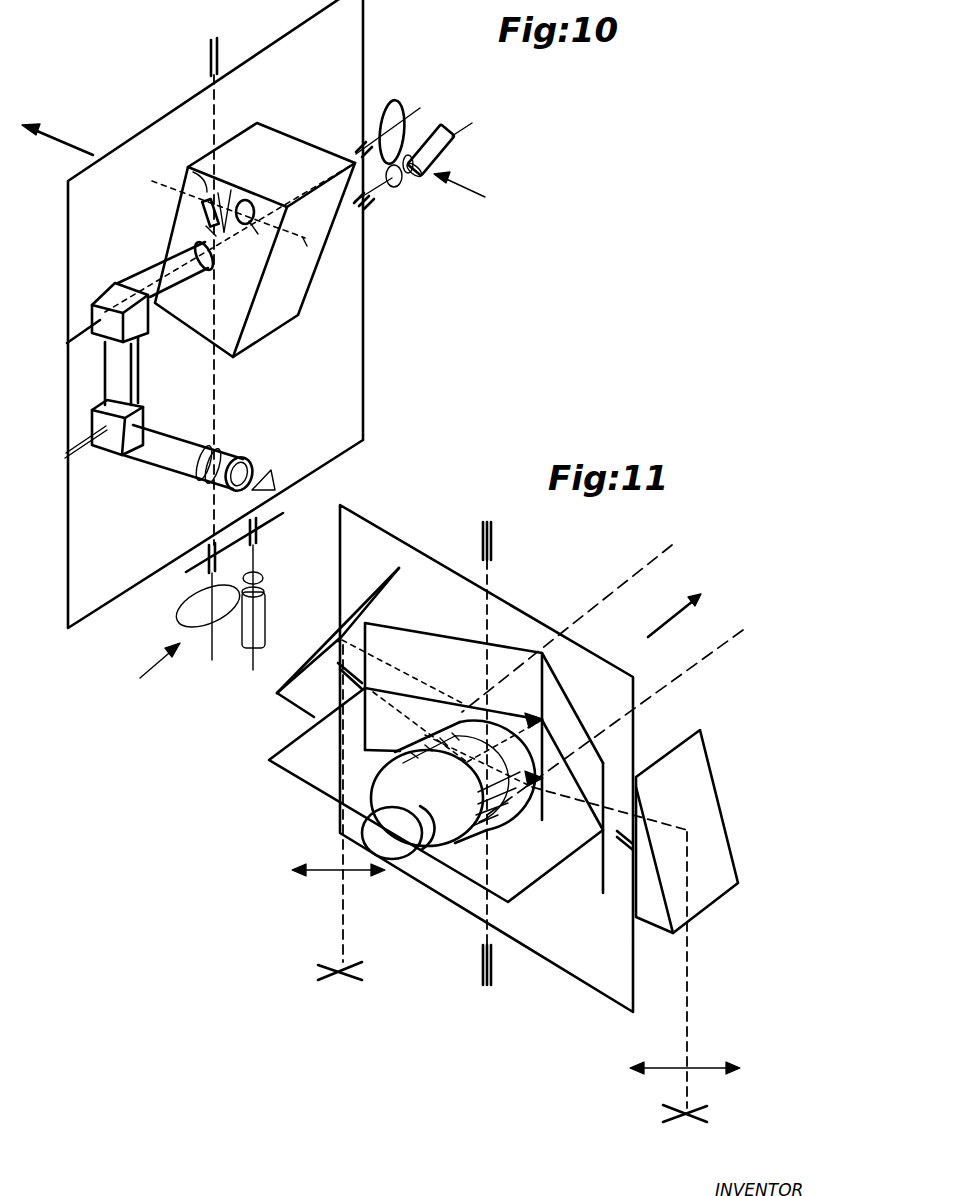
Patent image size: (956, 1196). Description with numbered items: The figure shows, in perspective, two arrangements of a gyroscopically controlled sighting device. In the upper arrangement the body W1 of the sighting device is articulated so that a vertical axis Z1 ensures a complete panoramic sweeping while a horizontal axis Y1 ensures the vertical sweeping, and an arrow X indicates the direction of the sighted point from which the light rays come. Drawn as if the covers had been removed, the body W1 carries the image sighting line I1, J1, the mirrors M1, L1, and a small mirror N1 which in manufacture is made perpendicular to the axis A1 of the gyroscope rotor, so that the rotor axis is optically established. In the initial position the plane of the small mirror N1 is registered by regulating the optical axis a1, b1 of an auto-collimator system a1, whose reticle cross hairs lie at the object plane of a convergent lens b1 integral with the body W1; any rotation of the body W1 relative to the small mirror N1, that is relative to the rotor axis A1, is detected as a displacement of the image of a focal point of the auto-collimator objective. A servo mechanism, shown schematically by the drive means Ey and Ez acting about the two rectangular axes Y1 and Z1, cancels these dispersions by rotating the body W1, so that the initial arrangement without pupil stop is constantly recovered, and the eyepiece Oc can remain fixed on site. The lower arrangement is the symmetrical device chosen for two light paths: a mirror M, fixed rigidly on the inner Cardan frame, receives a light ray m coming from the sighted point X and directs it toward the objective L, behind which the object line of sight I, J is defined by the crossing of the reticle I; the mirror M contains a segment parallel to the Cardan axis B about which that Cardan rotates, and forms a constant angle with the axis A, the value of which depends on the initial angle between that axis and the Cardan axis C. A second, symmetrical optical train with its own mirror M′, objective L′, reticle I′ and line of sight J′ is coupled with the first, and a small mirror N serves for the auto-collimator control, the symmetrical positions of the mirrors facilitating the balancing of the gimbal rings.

In FIG. 10, the vertical axis Z1 is at (221, 61).
In FIG. 10, the sighted point X is at (57, 136).
In FIG. 11, the sighted point X is at (674, 616).
In FIG. 10, the horizontal axis Y1 is at (70, 335).
In FIG. 10, the body of the sighting device W1 is at (230, 334).
In FIG. 10, the image sighting line I1 is at (184, 285).
In FIG. 10, the auto-collimator system a1 is at (304, 241).
In FIG. 10, the convergent lens b1 is at (263, 239).
In FIG. 10, the mirror L1 is at (203, 211).
In FIG. 10, the small mirror N1 is at (252, 201).
In FIG. 10, the mirror M1 is at (224, 232).
In FIG. 10, the image sighting line J1 is at (207, 228).
In FIG. 10, the axis of the rotor of the gyroscope A1 is at (200, 197).
In FIG. 10, the eyepiece Oc is at (248, 437).
In FIG. 10, the drive means Ey is at (471, 193).
In FIG. 10, the drive means Ez is at (147, 674).
In FIG. 11, the Cardan axis C is at (500, 540).
In FIG. 11, the reticle I′ is at (339, 634).
In FIG. 11, the objective L′ is at (360, 603).
In FIG. 11, the mirror M′ is at (473, 642).
In FIG. 11, the Cardan axis B is at (332, 676).
In FIG. 11, the mirror M is at (562, 690).
In FIG. 11, the light ray m is at (462, 700).
In FIG. 11, the objective L is at (695, 765).
In FIG. 11, the reticle I is at (688, 832).
In FIG. 11, the axis A is at (540, 770).
In FIG. 11, the small mirror N is at (400, 859).
In FIG. 11, the object line of sight J′ is at (338, 856).
In FIG. 11, the object line of sight J is at (685, 1057).